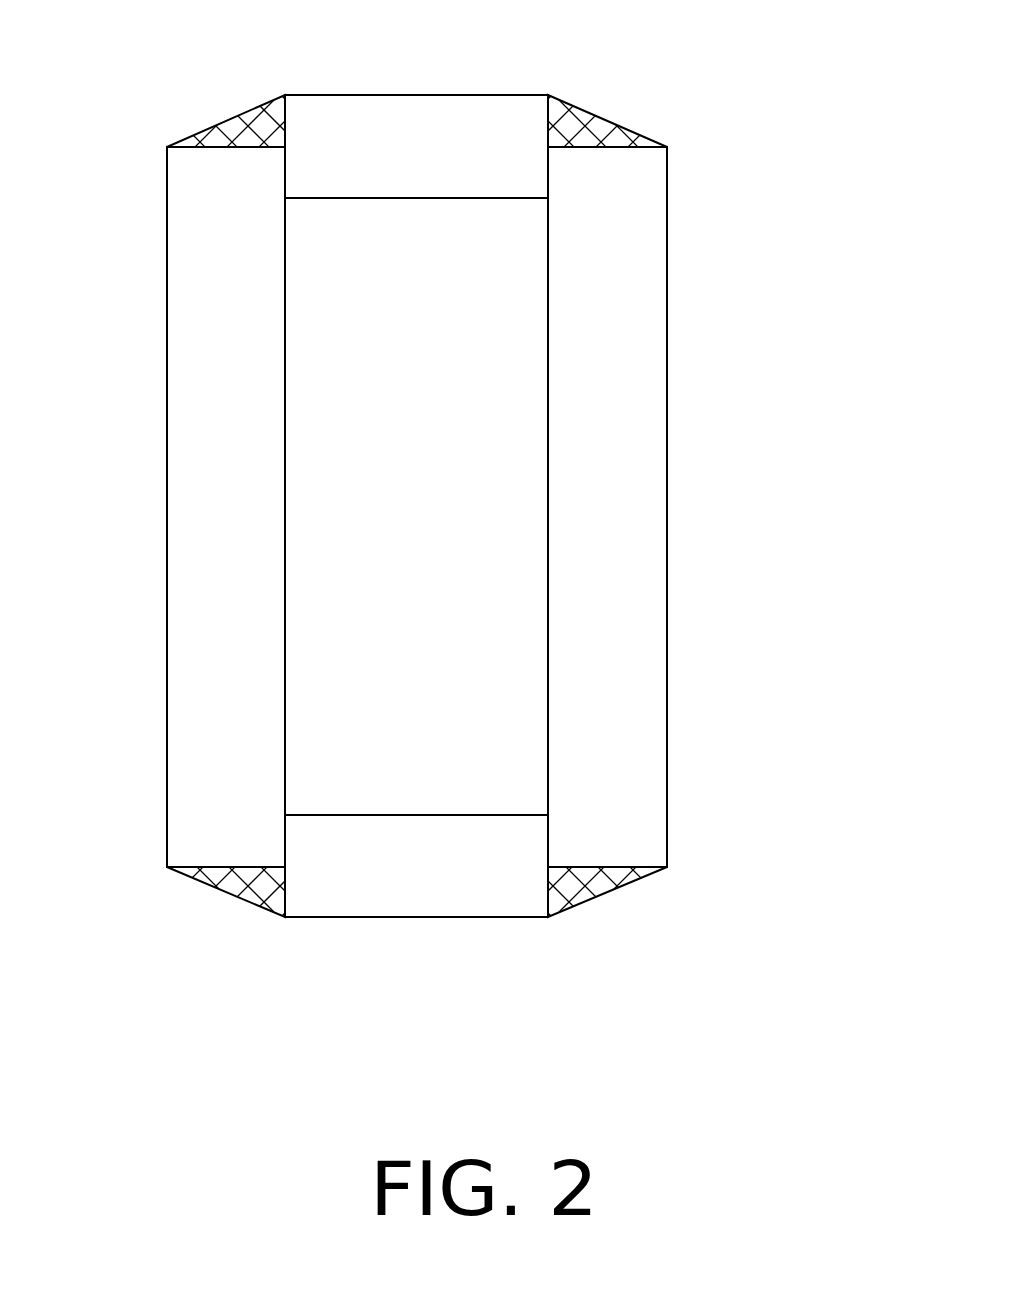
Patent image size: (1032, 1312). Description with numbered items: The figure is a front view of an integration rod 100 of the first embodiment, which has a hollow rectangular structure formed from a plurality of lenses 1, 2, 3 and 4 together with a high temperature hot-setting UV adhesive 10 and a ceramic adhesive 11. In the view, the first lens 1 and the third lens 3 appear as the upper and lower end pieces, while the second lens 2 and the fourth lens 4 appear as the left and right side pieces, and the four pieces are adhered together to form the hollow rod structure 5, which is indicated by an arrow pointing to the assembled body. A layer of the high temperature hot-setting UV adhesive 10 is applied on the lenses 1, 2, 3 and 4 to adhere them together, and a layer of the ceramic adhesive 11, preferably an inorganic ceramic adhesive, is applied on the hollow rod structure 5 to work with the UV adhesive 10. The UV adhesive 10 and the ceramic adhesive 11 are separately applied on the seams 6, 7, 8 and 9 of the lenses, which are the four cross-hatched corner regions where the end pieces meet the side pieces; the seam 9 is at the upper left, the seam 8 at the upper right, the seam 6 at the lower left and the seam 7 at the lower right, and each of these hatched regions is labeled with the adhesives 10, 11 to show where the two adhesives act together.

The lens 1 is at (412, 92).
The lens 2 is at (182, 443).
The lens 3 is at (425, 897).
The lens 4 is at (653, 760).
The hollow rod structure 5 is at (640, 600).
The seam 6 is at (250, 900).
The seam 7 is at (563, 903).
The seam 8 is at (592, 133).
The seam 9 is at (277, 133).
The high temperature hot-setting UV adhesive 10 is at (426, 513).
The ceramic adhesive 11 is at (153, 932).
The integration rod 100 is at (760, 452).